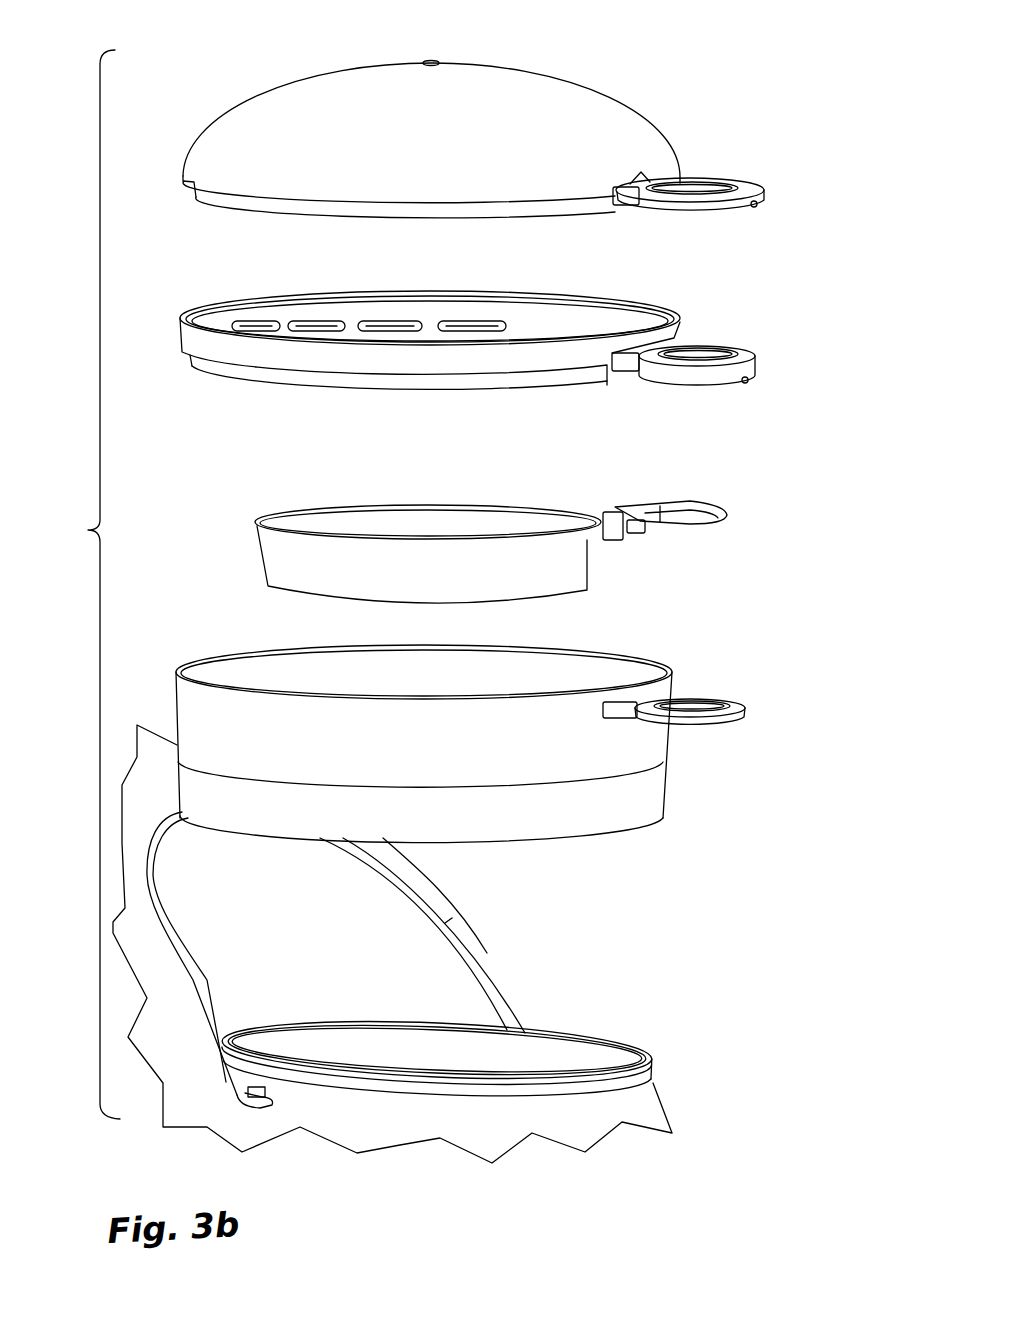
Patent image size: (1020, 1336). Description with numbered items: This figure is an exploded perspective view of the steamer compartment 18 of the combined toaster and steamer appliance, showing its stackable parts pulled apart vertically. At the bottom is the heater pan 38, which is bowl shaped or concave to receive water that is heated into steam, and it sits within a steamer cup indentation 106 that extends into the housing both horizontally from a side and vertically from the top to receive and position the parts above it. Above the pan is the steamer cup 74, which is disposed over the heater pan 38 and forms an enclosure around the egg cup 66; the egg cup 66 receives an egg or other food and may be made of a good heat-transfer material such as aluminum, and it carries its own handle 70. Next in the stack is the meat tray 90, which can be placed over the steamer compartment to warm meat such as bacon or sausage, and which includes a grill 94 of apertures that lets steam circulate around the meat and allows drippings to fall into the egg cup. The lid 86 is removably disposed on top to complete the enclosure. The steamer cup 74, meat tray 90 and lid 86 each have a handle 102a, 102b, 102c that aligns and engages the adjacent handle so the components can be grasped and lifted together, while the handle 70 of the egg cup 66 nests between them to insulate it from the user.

The steamer compartment 18 is at (80, 584).
The lid 86 is at (514, 63).
The lid handle 102c is at (700, 177).
The meat tray 90 is at (453, 321).
The grill 94 is at (433, 340).
The meat tray handle 102b is at (712, 343).
The egg cup 66 is at (542, 567).
The egg cup handle 70 is at (690, 503).
The steamer cup 74 is at (667, 802).
The steamer cup handle 102a is at (693, 727).
The steamer cup indentation 106 is at (460, 978).
The heater pan 38 is at (583, 1057).